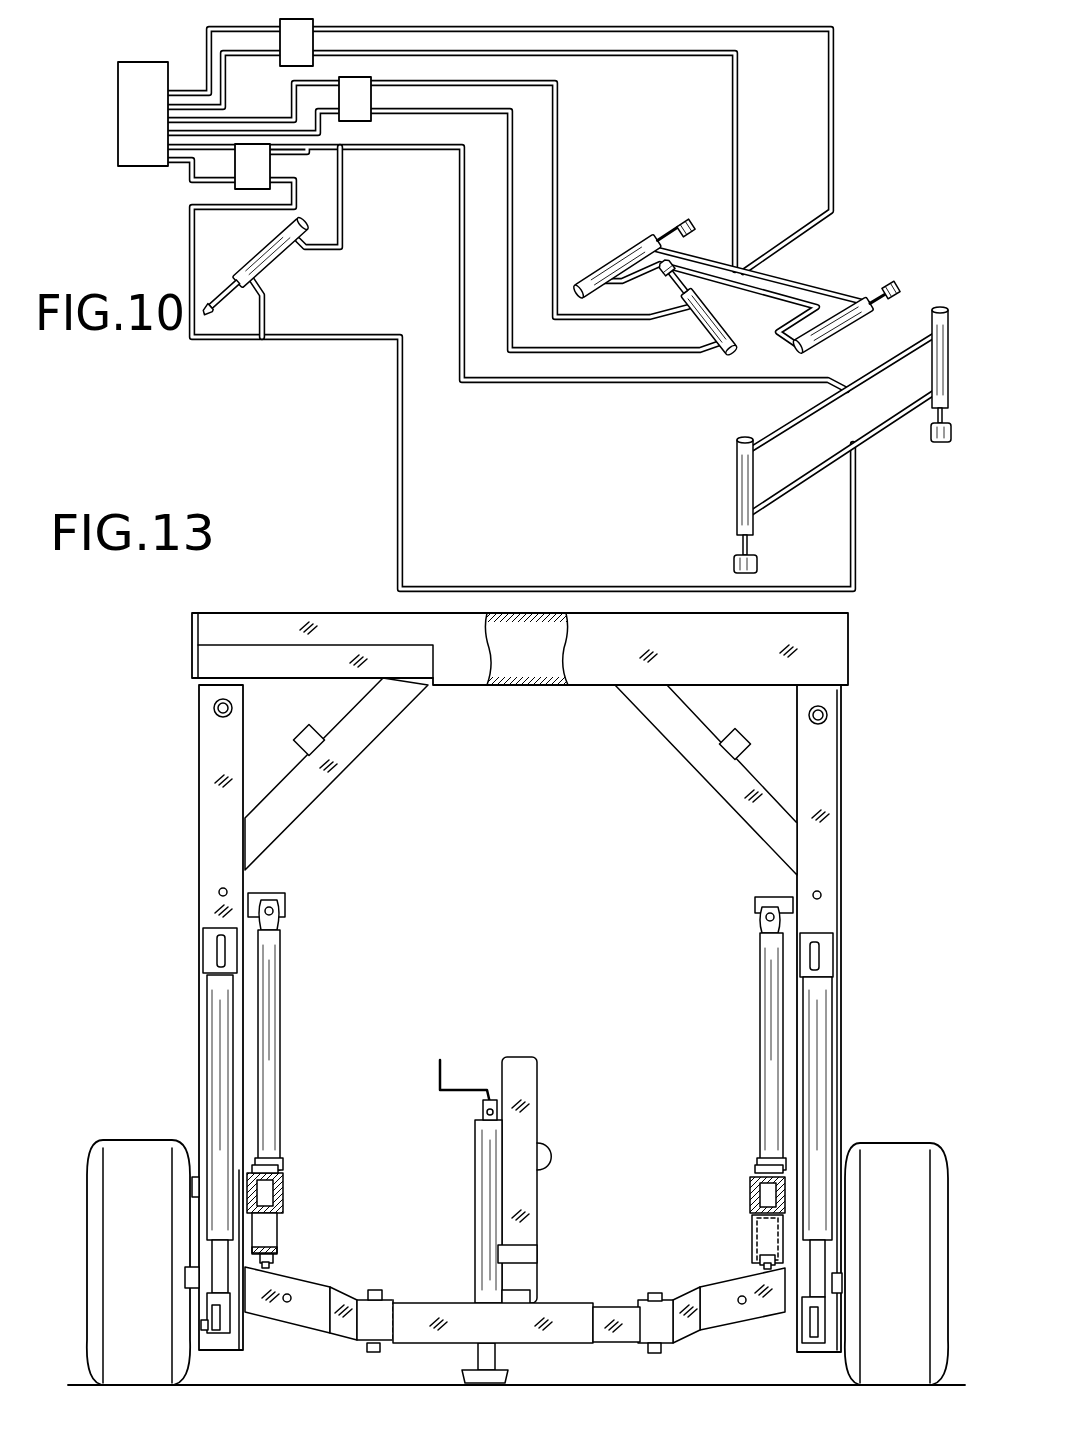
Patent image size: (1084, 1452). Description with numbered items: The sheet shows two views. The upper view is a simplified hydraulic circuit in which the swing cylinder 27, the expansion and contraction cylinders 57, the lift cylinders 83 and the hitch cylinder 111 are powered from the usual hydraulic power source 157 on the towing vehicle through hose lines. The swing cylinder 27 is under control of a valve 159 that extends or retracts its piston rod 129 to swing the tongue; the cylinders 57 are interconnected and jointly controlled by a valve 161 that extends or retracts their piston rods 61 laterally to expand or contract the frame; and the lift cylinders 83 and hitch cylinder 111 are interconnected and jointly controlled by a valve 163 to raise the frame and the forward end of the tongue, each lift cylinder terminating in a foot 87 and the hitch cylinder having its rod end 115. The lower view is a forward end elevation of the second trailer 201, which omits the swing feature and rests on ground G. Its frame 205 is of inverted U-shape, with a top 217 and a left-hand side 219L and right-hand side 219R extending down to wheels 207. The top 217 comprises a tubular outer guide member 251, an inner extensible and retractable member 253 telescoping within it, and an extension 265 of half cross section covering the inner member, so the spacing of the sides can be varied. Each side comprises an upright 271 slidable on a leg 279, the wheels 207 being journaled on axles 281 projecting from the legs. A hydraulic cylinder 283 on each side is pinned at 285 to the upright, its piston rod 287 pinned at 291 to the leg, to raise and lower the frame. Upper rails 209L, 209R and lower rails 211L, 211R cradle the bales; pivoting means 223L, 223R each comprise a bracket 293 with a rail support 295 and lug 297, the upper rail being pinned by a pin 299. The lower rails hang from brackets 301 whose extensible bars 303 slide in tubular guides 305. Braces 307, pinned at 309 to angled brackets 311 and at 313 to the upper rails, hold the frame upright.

In FIG. 10, the hydraulic power source 157 is at (117, 96).
In FIG. 10, the valve 159 is at (372, 99).
In FIG. 10, the valve 161 is at (279, 50).
In FIG. 10, the valve 163 is at (236, 189).
In FIG. 10, the hitch cylinder 111 is at (278, 257).
In FIG. 10, the piston rod 115 is at (230, 297).
In FIG. 10, the expansion and contraction cylinders 57 is at (637, 230).
In FIG. 10, the piston rods 61 is at (692, 232).
In FIG. 10, the piston rod 129 is at (705, 292).
In FIG. 10, the swing cylinder 27 is at (735, 338).
In FIG. 10, the lift cylinders 83 is at (757, 475).
In FIG. 10, the cylinder foot connector 87 is at (732, 558).
In FIG. 13, the trailer 201 is at (872, 803).
In FIG. 13, the frame 205 is at (530, 624).
In FIG. 13, the wheels 207 is at (100, 1148).
In FIG. 13, the upper rail 209R is at (287, 1190).
In FIG. 13, the upper rail 209L is at (730, 1186).
In FIG. 13, the lower rail 211R is at (395, 1300).
In FIG. 13, the lower rail 211L is at (637, 1327).
In FIG. 13, the top 217 is at (396, 604).
In FIG. 13, the right-hand side 219R is at (198, 857).
In FIG. 13, the left-hand side 219L is at (845, 855).
In FIG. 13, the means for pivoting the right-hand rails 223R is at (312, 1231).
In FIG. 13, the means for pivoting the left-hand rails 223L is at (728, 1238).
In FIG. 13, the tubular outer guide member 251 is at (430, 683).
In FIG. 13, the inner extensible and retractable member 253 is at (210, 665).
In FIG. 13, the extension 265 is at (307, 578).
In FIG. 13, the upright 271 is at (210, 758).
In FIG. 13, the legs 279 is at (220, 1350).
In FIG. 13, the axles 281 is at (870, 1305).
In FIG. 13, the hydraulic cylinders 283 is at (212, 1028).
In FIG. 13, the pin connection 285 is at (215, 950).
In FIG. 13, the piston rod 287 is at (870, 1245).
In FIG. 13, the pin connection 291 is at (870, 1352).
In FIG. 13, the bracket 293 is at (275, 1258).
In FIG. 13, the rail support 295 is at (280, 1225).
In FIG. 13, the lug 297 is at (283, 1168).
In FIG. 13, the pin 299 is at (270, 1268).
In FIG. 13, the brackets 301 is at (312, 1345).
In FIG. 13, the extensible bars 303 is at (355, 1345).
In FIG. 13, the tubular guides 305 is at (270, 1310).
In FIG. 13, the braces 307 is at (281, 1022).
In FIG. 13, the pin connection 309 is at (280, 925).
In FIG. 13, the angled brackets 311 is at (288, 905).
In FIG. 13, the pin connection 313 is at (290, 1160).
In FIG. 13, the ground G is at (570, 1385).